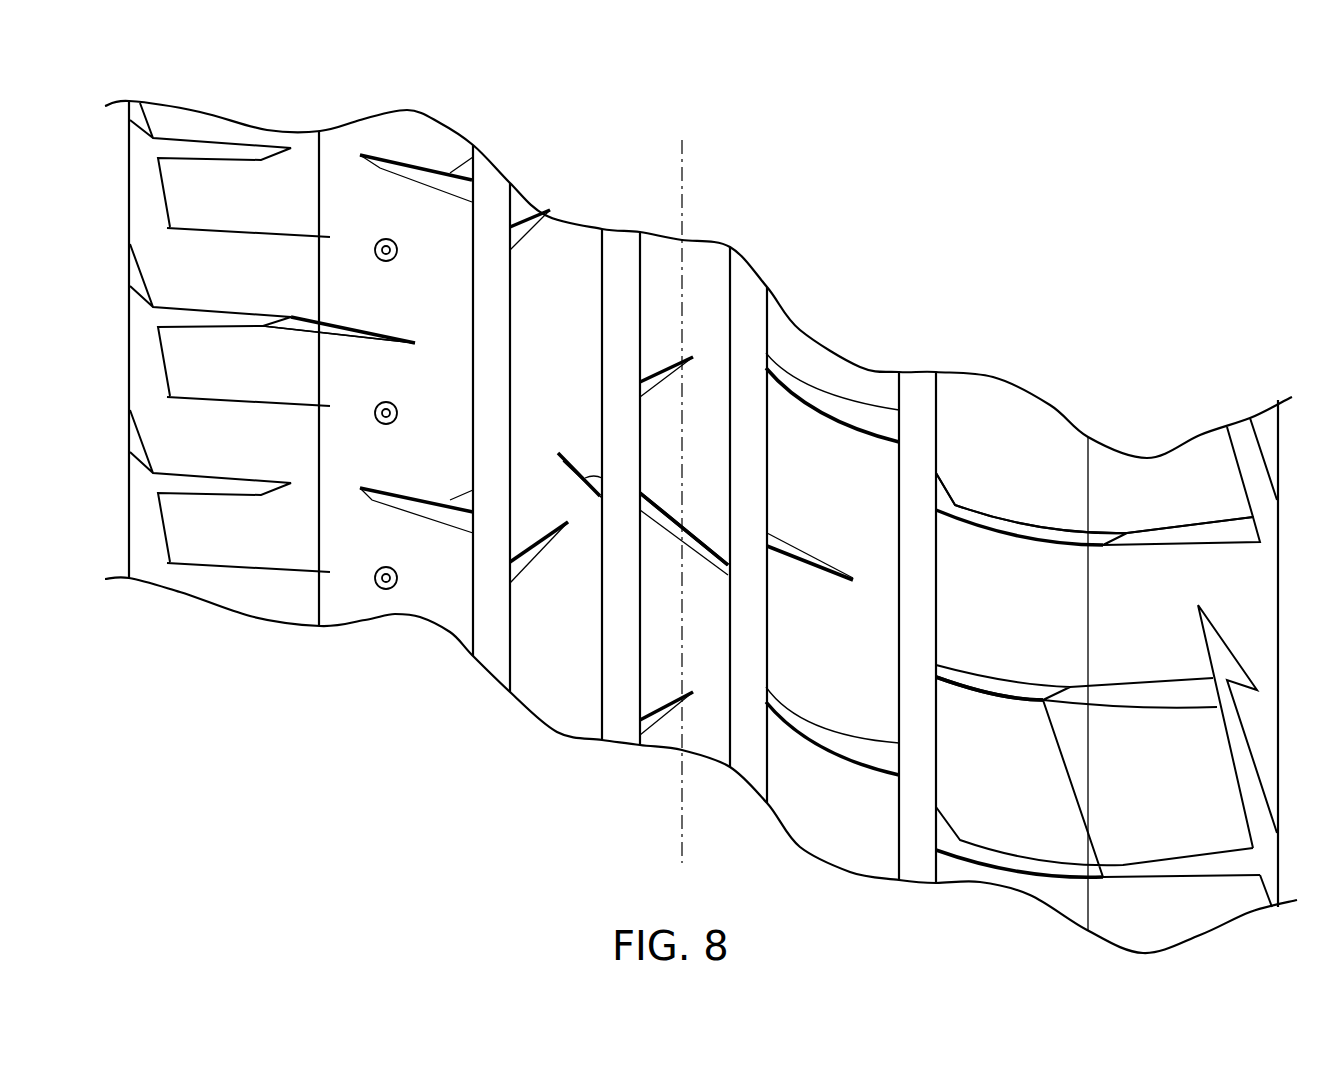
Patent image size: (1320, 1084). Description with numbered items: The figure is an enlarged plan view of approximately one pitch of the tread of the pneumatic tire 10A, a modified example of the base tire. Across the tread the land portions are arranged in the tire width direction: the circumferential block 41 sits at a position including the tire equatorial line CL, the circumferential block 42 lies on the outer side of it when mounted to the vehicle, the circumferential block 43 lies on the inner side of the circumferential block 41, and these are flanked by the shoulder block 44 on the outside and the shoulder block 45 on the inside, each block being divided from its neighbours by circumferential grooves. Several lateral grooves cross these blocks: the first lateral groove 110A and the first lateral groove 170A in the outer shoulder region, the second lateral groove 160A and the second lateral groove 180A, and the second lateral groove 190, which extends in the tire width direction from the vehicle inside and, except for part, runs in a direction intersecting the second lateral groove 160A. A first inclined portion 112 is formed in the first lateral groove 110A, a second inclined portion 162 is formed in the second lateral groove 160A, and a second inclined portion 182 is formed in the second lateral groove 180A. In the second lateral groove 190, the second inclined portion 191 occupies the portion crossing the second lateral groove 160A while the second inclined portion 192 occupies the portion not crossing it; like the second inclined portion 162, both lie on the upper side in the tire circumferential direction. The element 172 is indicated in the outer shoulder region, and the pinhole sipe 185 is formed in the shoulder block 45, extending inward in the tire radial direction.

The pneumatic tire 10A is at (1228, 400).
The tire equatorial line CL is at (683, 163).
The circumferential block 41 is at (652, 258).
The circumferential block 42 is at (835, 375).
The circumferential block 43 is at (560, 265).
The shoulder block 44 is at (1003, 440).
The shoulder block 45 is at (358, 135).
The first lateral groove 110A is at (1017, 500).
The first inclined portion 112 is at (950, 520).
The second lateral groove 160A is at (704, 585).
The second inclined portion 162 is at (693, 537).
The first lateral groove 170A is at (1035, 680).
The sipe 172 is at (1010, 697).
The second lateral groove 180A is at (337, 337).
The second inclined portion 182 is at (367, 330).
The pinhole sipe 185 is at (388, 402).
The second lateral groove 190 is at (658, 416).
The second inclined portion 191 is at (660, 372).
The second inclined portion 192 is at (427, 497).